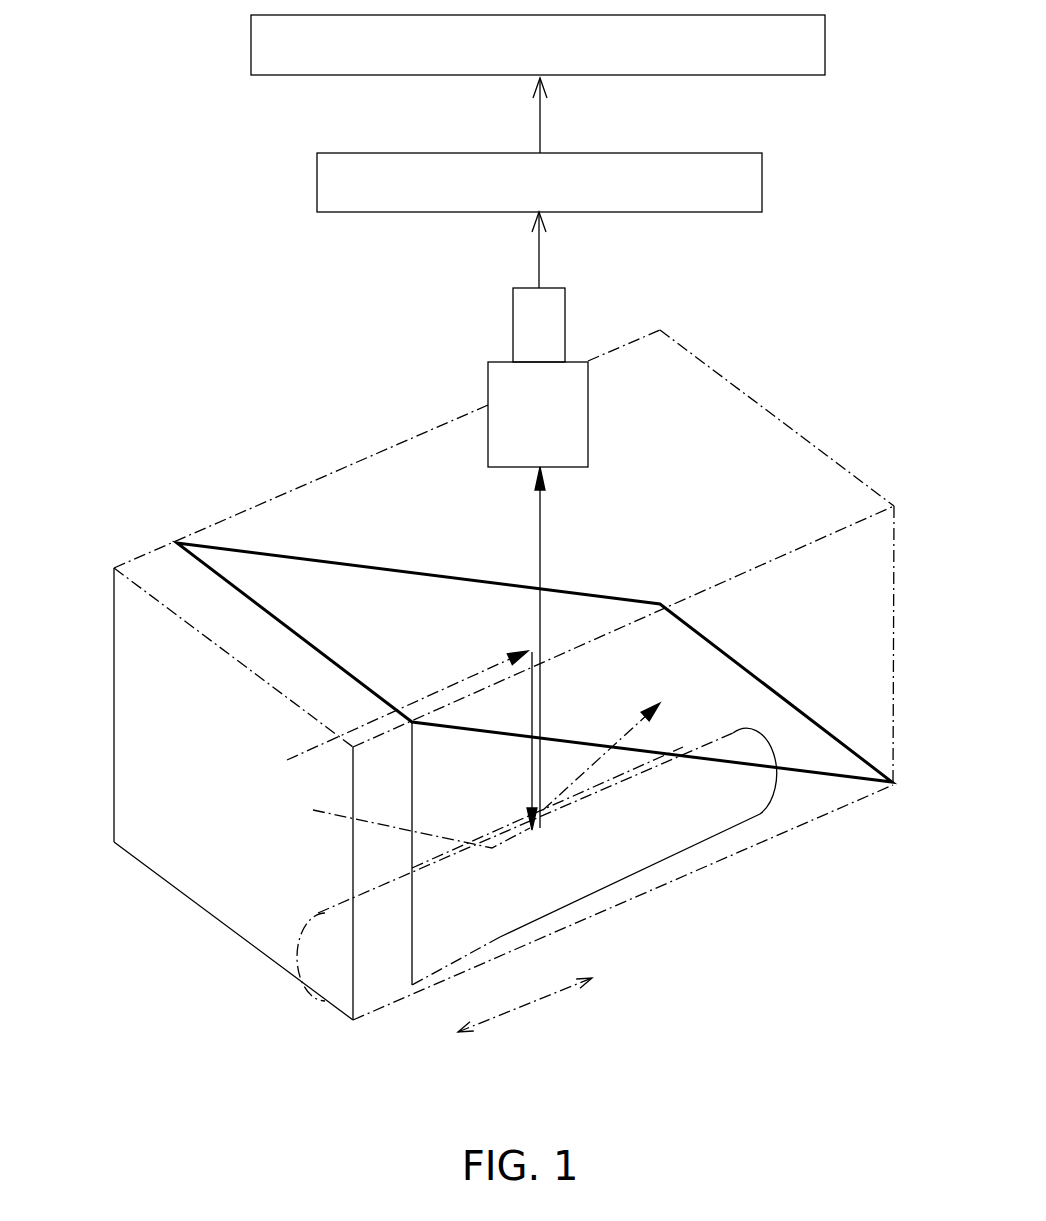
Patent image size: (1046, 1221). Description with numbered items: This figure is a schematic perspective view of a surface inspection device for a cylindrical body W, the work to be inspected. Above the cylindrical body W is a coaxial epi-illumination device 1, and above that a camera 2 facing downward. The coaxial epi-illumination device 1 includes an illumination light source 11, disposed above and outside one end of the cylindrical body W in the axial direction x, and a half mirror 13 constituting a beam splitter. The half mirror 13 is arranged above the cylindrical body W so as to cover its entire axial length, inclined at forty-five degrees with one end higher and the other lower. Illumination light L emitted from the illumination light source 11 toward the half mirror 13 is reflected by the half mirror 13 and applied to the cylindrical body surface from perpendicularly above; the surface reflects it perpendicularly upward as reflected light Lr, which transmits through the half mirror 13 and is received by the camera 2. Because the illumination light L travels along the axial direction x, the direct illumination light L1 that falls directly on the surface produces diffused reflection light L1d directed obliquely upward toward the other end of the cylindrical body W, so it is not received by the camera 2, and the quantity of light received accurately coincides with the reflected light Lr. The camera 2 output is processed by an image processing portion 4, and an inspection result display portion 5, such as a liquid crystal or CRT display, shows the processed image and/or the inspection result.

The coaxial epi-illumination device 1 is at (793, 418).
The camera 2 is at (573, 362).
The image processing portion 4 is at (767, 182).
The inspection result display portion 5 is at (830, 44).
The illumination light source 11 is at (250, 882).
The half mirror 13 is at (338, 588).
The cylindrical body W is at (667, 830).
The illumination light L is at (457, 684).
The direct illumination light L1 is at (442, 837).
The diffused reflection light L1d is at (657, 712).
The reflected light Lr is at (546, 540).
The axial direction x is at (525, 1011).